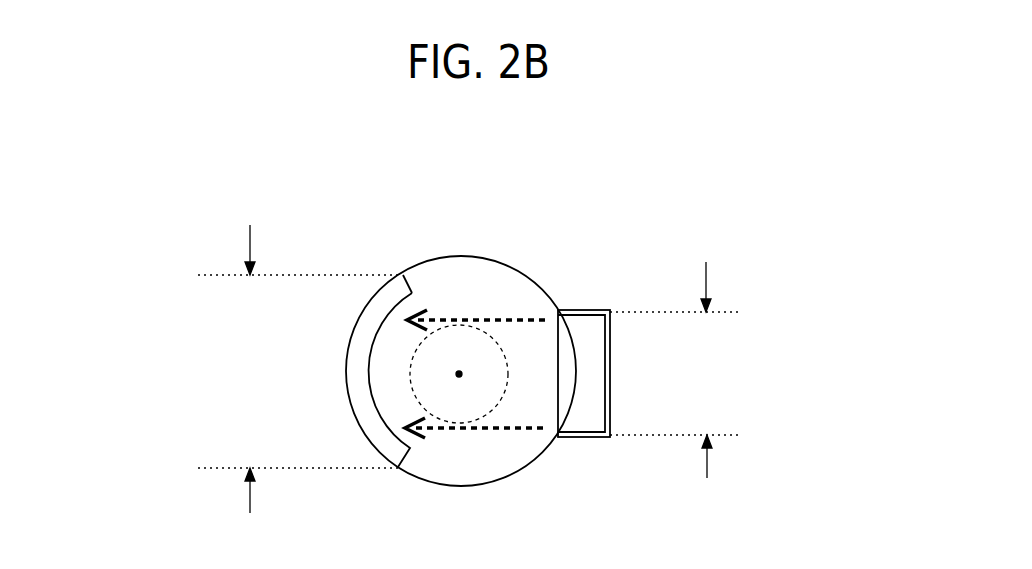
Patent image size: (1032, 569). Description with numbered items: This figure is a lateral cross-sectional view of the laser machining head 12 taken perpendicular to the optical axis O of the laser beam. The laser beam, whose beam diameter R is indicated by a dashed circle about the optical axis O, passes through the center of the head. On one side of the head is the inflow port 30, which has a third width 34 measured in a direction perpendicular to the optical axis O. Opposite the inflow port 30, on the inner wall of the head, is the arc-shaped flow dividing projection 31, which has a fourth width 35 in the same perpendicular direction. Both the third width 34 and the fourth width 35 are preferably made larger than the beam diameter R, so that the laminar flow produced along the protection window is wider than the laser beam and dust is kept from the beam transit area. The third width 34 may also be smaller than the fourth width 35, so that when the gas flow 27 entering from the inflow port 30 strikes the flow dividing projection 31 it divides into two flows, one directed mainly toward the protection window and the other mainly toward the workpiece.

The laser machining head 12 is at (657, 178).
The gas flow 27 is at (453, 320).
The inflow port 30 is at (593, 377).
The flow dividing projection 31 is at (360, 382).
The third width 34 is at (708, 467).
The fourth width 35 is at (252, 503).
The beam diameter R is at (487, 338).
The optical axis O is at (459, 376).